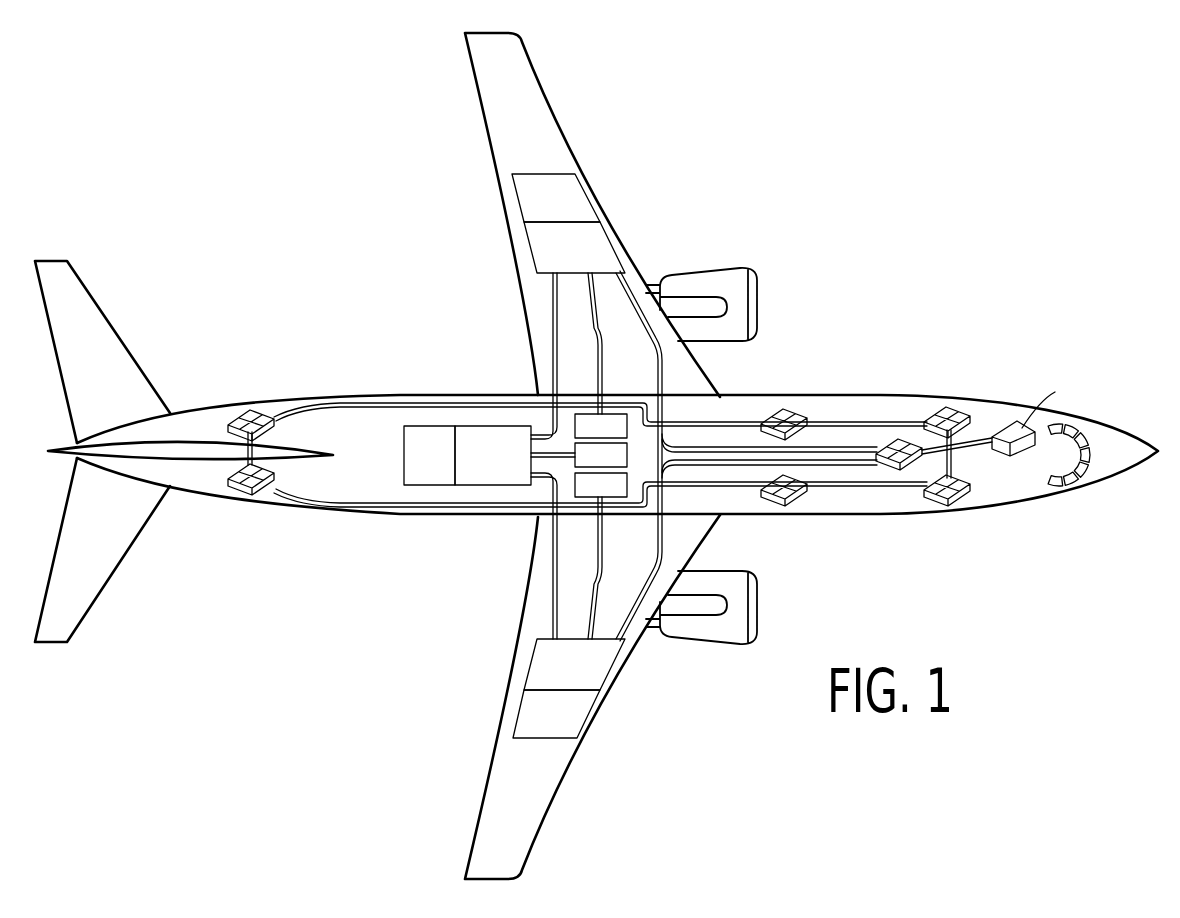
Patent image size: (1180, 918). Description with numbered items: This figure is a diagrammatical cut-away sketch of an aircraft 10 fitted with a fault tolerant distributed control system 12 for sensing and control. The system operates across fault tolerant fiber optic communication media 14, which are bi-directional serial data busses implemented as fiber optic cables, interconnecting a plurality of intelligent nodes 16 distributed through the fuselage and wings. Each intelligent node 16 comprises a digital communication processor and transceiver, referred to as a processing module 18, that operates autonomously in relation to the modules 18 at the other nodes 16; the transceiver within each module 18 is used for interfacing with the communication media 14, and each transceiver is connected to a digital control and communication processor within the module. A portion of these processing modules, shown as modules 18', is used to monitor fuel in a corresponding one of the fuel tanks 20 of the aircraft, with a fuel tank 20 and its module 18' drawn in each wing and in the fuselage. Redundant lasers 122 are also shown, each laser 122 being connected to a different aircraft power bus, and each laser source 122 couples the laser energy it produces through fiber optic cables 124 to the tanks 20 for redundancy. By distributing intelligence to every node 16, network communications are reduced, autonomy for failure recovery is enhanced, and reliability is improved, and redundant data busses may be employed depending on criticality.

The aircraft 10 is at (776, 155).
The fault tolerant distributed control system 12 is at (850, 415).
The fiber optic communication media 14 is at (553, 365).
The intelligent node 16 is at (629, 456).
The processing module 18 is at (629, 458).
The processing module monitoring fuel 18' is at (571, 456).
The fuel tank 20 is at (587, 196).
The laser 122 is at (634, 453).
The fiber optic cable 124 is at (587, 297).